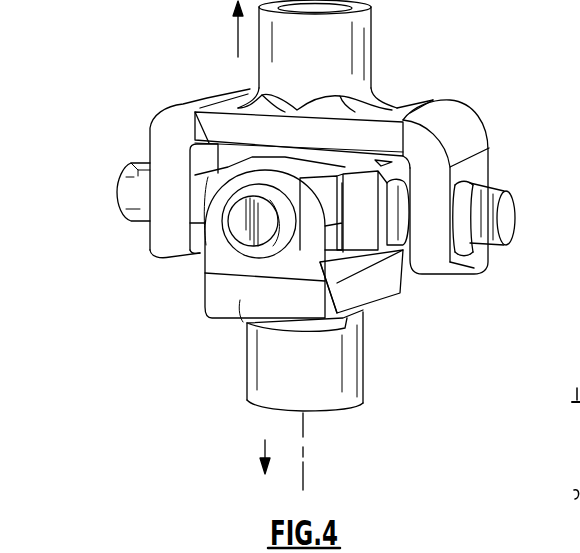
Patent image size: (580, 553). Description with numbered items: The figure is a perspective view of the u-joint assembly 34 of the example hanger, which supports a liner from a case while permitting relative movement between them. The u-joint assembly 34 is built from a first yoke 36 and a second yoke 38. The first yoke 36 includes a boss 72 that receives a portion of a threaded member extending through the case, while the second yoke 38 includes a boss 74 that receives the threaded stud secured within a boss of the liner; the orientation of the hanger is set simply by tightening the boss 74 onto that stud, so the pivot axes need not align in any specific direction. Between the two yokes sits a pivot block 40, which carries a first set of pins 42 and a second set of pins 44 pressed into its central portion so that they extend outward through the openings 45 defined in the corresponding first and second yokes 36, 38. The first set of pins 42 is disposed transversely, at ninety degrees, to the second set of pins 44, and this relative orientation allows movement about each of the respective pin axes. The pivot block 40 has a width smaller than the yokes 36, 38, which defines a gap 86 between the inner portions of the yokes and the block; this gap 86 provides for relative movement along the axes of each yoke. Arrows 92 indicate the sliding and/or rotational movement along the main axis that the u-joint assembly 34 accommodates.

The u-joint assembly 34 is at (126, 100).
The first yoke 36 is at (468, 137).
The second yoke 38 is at (254, 262).
The pivot block 40 is at (382, 240).
The first set of pins 42 is at (506, 216).
The second set of pins 44 is at (238, 242).
The openings 45 is at (476, 182).
The boss 72 is at (363, 48).
The boss 74 is at (355, 371).
The gap 86 is at (404, 192).
The arrows 92 is at (237, 32).